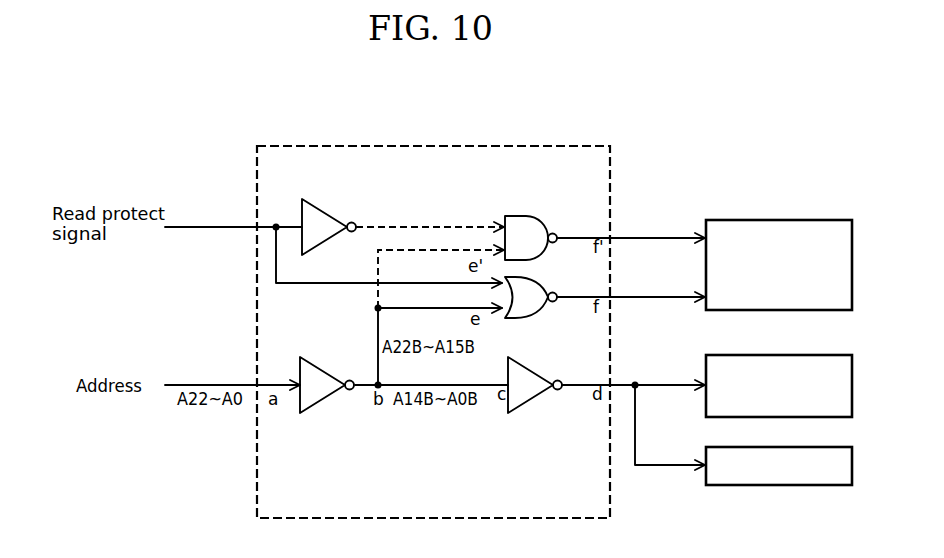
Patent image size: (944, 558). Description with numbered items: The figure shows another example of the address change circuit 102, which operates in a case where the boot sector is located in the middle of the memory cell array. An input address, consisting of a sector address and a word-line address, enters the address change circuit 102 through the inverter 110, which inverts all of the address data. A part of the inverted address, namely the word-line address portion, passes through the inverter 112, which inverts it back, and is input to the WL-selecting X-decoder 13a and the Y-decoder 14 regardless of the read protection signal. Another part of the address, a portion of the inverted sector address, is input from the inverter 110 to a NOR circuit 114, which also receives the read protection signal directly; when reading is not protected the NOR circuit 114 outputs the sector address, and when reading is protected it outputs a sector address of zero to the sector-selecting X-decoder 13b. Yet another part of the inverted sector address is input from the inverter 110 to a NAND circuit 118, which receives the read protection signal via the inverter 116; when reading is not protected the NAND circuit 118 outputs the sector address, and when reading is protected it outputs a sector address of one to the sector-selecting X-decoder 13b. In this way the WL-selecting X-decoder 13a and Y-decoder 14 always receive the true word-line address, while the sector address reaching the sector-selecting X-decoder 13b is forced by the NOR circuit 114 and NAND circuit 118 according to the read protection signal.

The address change circuit 102 is at (497, 146).
The inverter 110 is at (313, 408).
The inverter 112 is at (530, 365).
The NOR circuit 114 is at (538, 278).
The inverter 116 is at (318, 248).
The NAND circuit 118 is at (537, 216).
The WL-selecting X-decoder 13a is at (852, 384).
The sector-selecting X-decoder 13b is at (852, 259).
The Y-decoder 14 is at (852, 466).